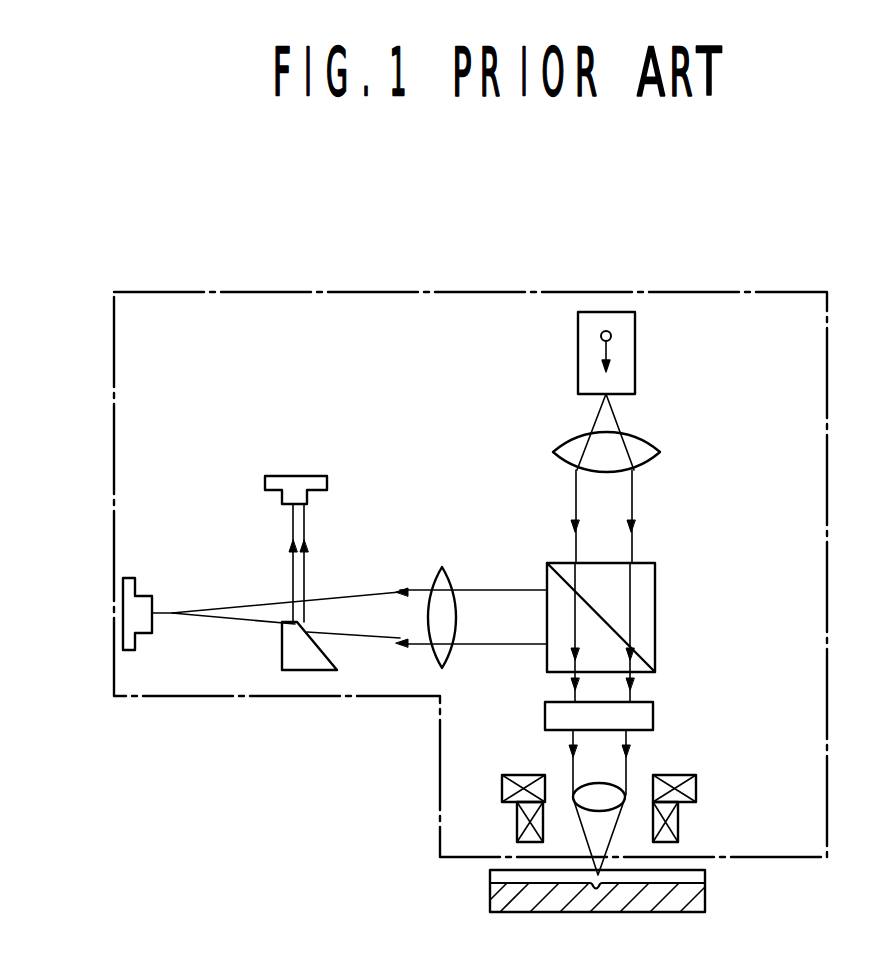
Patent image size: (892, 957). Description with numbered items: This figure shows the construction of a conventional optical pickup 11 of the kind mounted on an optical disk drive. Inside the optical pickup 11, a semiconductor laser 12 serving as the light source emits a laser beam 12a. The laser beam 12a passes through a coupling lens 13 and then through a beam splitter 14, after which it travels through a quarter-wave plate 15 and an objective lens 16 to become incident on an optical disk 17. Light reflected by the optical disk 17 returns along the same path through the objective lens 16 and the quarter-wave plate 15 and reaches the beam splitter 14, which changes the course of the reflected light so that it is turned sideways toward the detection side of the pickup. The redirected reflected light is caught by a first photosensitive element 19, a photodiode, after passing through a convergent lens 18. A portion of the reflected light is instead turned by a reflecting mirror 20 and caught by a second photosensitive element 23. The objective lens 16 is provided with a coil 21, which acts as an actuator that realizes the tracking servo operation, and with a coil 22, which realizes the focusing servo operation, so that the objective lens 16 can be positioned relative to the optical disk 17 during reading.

The optical pickup 11 is at (114, 386).
The semiconductor laser 12 is at (635, 334).
The laser beam 12a is at (607, 415).
The coupling lens 13 is at (660, 452).
The beam splitter 14 is at (655, 590).
The quarter-wave plate 15 is at (653, 712).
The objective lens 16 is at (606, 785).
The optical disk 17 is at (705, 893).
The convergent lens 18 is at (446, 575).
The first photosensitive element 19 is at (134, 578).
The reflecting mirror 20 is at (305, 671).
The coil 21 is at (696, 777).
The coil 22 is at (678, 822).
The second photosensitive element 23 is at (292, 476).